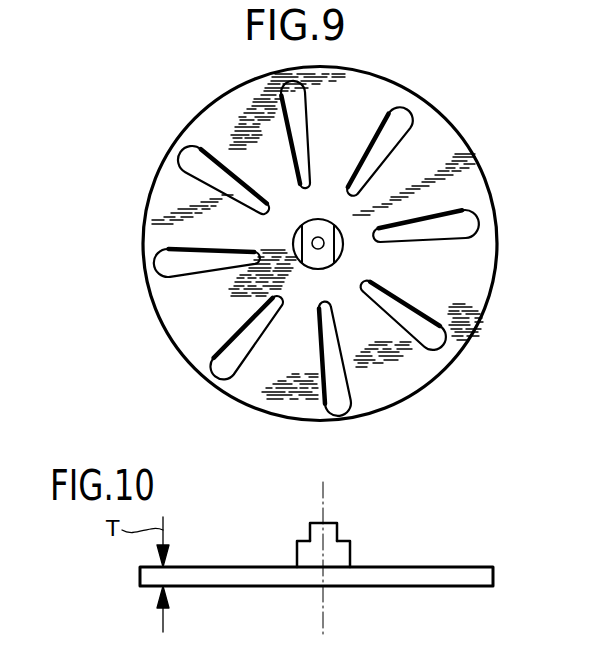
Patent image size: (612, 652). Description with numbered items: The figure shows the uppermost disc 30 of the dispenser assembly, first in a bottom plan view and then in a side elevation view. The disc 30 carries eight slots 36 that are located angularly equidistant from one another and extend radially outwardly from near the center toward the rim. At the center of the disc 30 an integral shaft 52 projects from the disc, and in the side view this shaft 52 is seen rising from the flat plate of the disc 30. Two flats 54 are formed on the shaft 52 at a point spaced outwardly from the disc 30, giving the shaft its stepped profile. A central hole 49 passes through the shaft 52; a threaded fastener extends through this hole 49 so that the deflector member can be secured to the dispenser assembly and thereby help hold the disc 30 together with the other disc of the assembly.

In FIG. 9, the uppermost disc 30 is at (455, 128).
In FIG. 10, the uppermost disc 30 is at (496, 566).
In FIG. 9, the slots 36 is at (280, 85).
In FIG. 9, the central hole 49 is at (317, 249).
In FIG. 9, the integral shaft 52 is at (316, 219).
In FIG. 10, the integral shaft 52 is at (351, 553).
In FIG. 9, the flats 54 is at (334, 243).
In FIG. 10, the flats 54 is at (338, 522).